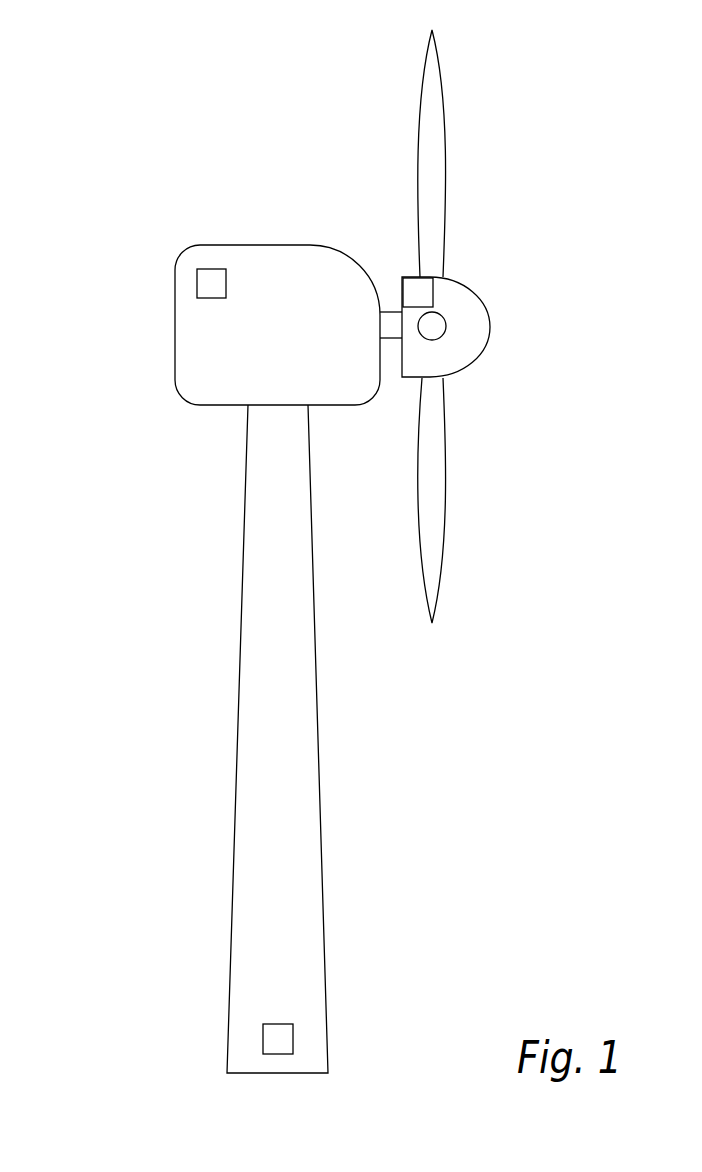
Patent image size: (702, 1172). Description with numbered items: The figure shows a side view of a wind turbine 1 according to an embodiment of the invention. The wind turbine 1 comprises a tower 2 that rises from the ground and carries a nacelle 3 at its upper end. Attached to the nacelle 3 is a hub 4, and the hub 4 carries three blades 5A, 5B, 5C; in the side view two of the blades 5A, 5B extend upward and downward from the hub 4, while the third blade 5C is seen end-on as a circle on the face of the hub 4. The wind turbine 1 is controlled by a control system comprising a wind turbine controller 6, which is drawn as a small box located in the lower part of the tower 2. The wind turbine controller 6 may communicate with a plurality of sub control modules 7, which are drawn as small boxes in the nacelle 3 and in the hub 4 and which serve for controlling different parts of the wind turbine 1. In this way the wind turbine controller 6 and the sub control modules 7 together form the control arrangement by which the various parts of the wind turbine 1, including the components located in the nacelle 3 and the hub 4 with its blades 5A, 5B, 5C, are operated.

The wind turbine 1 is at (112, 175).
The tower 2 is at (250, 922).
The nacelle 3 is at (185, 347).
The hub 4 is at (470, 307).
The blade 5A is at (433, 168).
The blade 5B is at (433, 569).
The blade 5C is at (435, 327).
The wind turbine controller 6 is at (277, 1042).
The sub control modules 7 is at (210, 284).